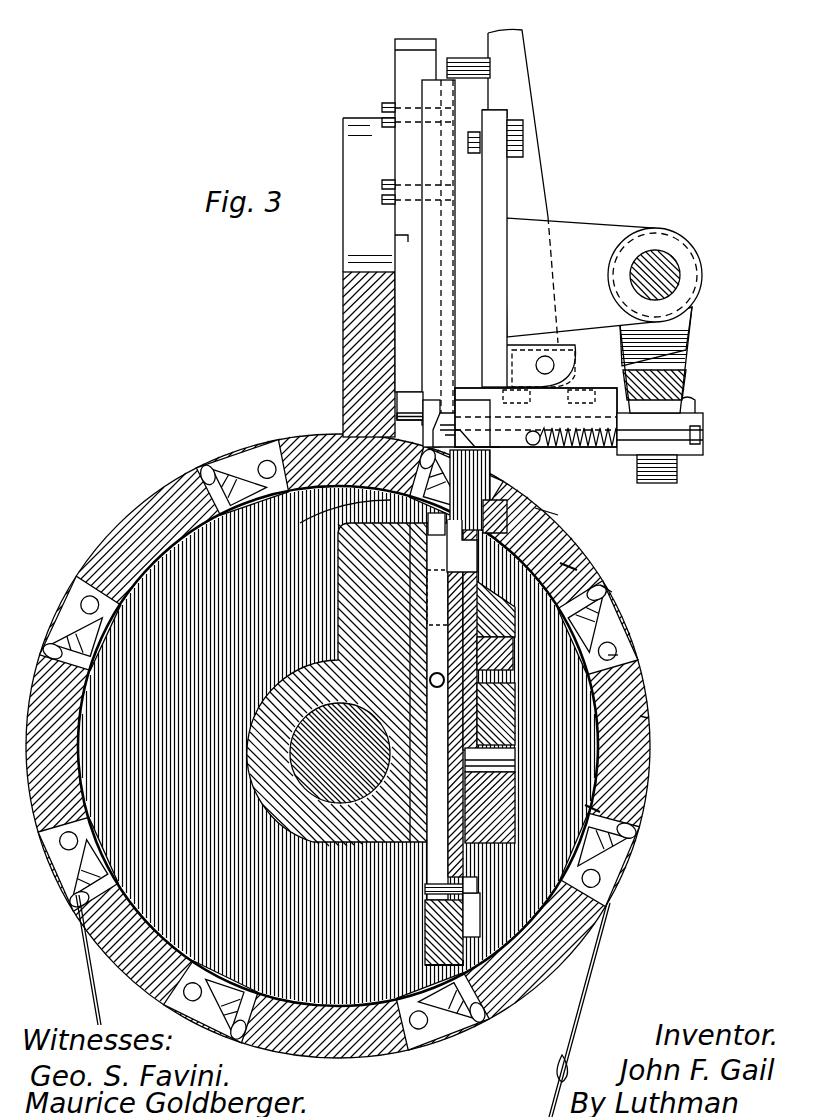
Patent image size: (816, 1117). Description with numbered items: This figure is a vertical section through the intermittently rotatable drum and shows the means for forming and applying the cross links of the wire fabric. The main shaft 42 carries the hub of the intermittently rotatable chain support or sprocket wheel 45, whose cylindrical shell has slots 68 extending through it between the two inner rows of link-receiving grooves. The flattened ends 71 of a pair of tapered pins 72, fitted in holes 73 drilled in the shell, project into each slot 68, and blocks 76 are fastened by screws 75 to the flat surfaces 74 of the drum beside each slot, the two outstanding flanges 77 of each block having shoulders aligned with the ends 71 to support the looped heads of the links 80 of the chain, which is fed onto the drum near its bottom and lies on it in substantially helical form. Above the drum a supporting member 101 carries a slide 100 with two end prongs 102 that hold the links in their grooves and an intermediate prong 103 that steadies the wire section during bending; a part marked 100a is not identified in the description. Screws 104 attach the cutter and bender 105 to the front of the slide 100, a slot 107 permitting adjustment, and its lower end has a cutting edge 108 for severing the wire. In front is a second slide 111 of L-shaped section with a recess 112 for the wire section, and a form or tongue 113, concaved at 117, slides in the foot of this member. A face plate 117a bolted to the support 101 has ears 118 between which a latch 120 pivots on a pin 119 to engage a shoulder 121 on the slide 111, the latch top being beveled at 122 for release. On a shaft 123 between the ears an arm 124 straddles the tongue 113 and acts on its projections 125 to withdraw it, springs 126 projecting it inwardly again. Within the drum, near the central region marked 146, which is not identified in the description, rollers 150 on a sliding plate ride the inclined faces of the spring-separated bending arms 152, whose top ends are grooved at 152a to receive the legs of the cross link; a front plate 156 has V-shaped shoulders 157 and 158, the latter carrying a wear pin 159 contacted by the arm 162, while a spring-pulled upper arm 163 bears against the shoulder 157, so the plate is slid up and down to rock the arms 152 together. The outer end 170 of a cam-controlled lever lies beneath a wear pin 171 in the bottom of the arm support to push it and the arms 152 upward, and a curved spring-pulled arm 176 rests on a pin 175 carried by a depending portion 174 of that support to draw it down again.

The main shaft 42 is at (305, 762).
The sprocket wheel 45 is at (130, 542).
The slots 68 is at (95, 652).
The flattened ends 71 is at (215, 470).
The tapered pins 72 is at (610, 585).
The holes 73 is at (625, 600).
The flat surfaces 74 is at (378, 1078).
The screws 75 is at (278, 462).
The blocks 76 is at (618, 655).
The outstanding flanges 77 is at (232, 470).
The links 80 is at (590, 945).
The slide 100 is at (380, 218).
The post 100a is at (420, 40).
The supporting member 101 is at (343, 340).
The end prongs 102 is at (400, 408).
The intermediate prong 103 is at (440, 432).
The screws 104 is at (383, 108).
The cutter and bender 105 is at (428, 143).
The slot 107 is at (395, 238).
The cutting edge 108 is at (432, 405).
The second slide 111 is at (470, 255).
The recess 112 is at (448, 417).
The forming tongue 113 is at (392, 490).
The concaved portion 117 is at (470, 440).
The face plate 117a is at (495, 198).
The ears 118 is at (622, 225).
The pin 119 is at (540, 350).
The latch 120 is at (530, 92).
The shoulder 121 is at (512, 116).
The beveled end 122 is at (523, 32).
The shaft 123 is at (672, 270).
The arm 124 is at (686, 347).
The projections 125 is at (703, 450).
The springs 126 is at (634, 448).
The bore 146 is at (292, 818).
The rollers 150 is at (427, 580).
The bending arms 152 is at (440, 640).
The grooves 152a is at (492, 497).
The front plate 156 is at (513, 650).
The top shoulder 157 is at (510, 635).
The bottom shoulder 158 is at (515, 805).
The wear pin 159 is at (515, 760).
The arm 162 is at (515, 728).
The upper arm 163 is at (520, 672).
The outer end 170 is at (425, 960).
The wear pin 171 is at (425, 890).
The depending portion 174 is at (425, 925).
The pin 175 is at (480, 915).
The curved arm 176 is at (477, 885).